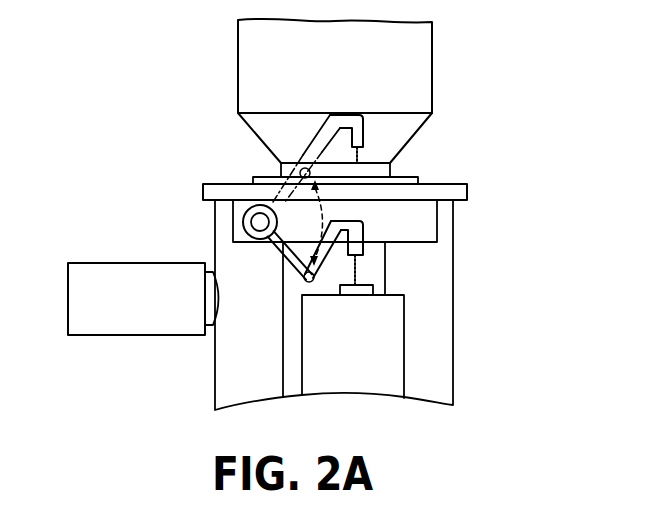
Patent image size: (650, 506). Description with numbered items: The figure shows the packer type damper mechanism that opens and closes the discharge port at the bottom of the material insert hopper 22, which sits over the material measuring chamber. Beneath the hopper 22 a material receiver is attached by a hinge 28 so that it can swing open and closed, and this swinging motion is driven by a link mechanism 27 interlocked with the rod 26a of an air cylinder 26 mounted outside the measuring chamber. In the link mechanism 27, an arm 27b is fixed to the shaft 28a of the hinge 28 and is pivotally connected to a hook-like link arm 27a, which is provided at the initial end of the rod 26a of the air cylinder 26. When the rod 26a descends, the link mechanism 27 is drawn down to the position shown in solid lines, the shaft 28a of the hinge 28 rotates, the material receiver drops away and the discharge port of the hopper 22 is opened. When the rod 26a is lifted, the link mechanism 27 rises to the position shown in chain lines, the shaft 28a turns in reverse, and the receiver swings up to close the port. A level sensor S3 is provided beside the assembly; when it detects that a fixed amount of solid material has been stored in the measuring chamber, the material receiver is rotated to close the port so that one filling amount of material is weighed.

The material insert hopper 22 is at (433, 92).
The link mechanism 27 is at (458, 166).
The hinge 28 is at (250, 205).
The shaft 28a is at (252, 240).
The arm 27b is at (302, 266).
The hook-like link arm 27a is at (328, 243).
The rod 26a is at (358, 268).
The air cylinder 26 is at (398, 312).
The level sensor S3 is at (160, 272).